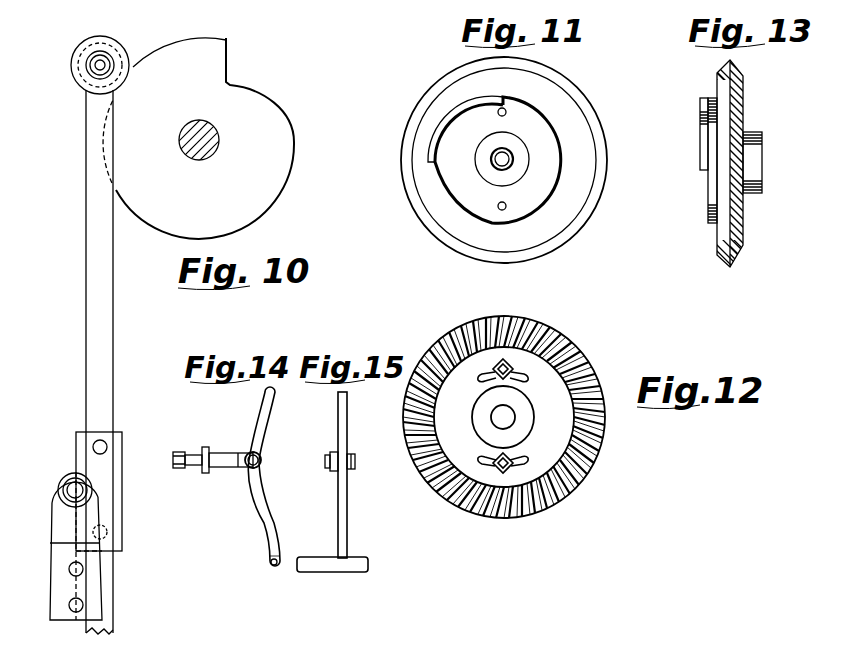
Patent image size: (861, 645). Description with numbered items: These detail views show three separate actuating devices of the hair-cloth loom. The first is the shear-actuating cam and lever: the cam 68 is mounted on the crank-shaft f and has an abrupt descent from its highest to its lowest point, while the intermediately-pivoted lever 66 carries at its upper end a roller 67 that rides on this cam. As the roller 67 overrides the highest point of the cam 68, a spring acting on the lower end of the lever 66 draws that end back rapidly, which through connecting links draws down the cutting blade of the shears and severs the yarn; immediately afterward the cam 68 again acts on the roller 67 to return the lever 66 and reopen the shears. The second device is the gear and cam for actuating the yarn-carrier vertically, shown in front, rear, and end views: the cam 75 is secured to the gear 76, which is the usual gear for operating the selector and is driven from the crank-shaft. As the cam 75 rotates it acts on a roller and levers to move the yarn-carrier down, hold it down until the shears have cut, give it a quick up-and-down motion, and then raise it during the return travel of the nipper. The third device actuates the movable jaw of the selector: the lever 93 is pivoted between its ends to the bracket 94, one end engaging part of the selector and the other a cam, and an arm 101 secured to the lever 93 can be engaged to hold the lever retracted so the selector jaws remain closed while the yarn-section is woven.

In FIG. 10, the intermediately-pivoted lever 66 is at (88, 360).
In FIG. 10, the roller 67 is at (71, 63).
In FIG. 10, the cam 68 is at (281, 183).
In FIG. 10, the crank-shaft f is at (220, 136).
In FIG. 11, the cam 75 is at (550, 133).
In FIG. 13, the cam 75 is at (708, 186).
In FIG. 11, the gear 76 is at (590, 220).
In FIG. 13, the gear 76 is at (745, 228).
In FIG. 12, the gear 76 is at (590, 466).
In FIG. 14, the lever 93 is at (262, 440).
In FIG. 15, the lever 93 is at (347, 491).
In FIG. 14, the bracket 94 is at (223, 469).
In FIG. 15, the bracket 94 is at (356, 459).
In FIG. 14, the arm 101 is at (268, 564).
In FIG. 15, the arm 101 is at (309, 568).